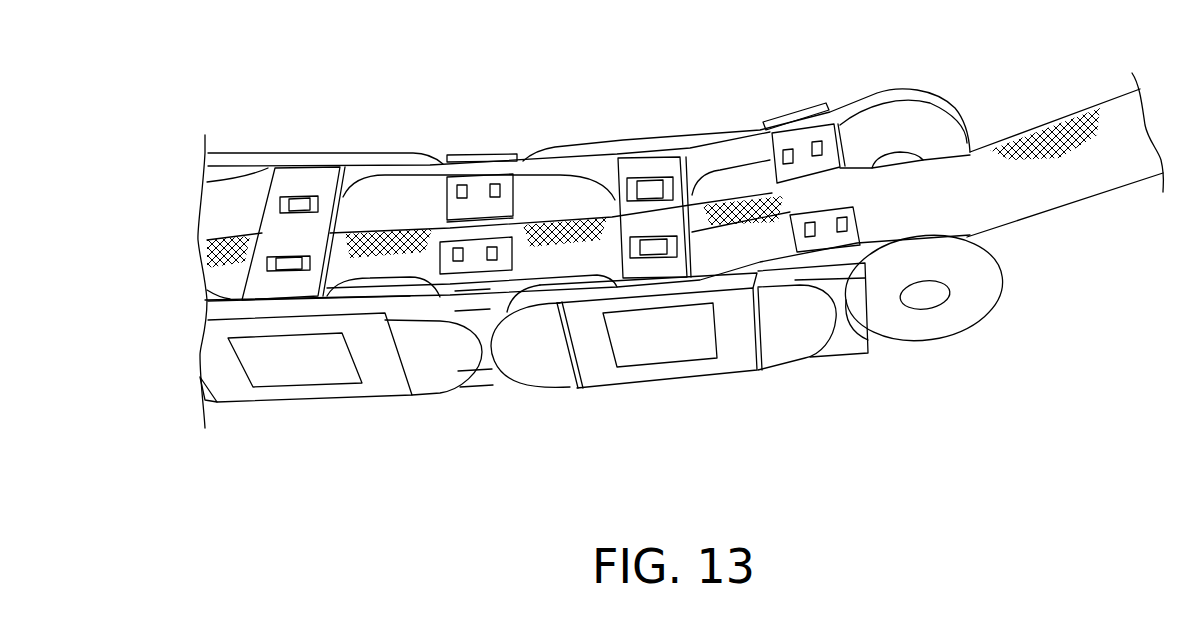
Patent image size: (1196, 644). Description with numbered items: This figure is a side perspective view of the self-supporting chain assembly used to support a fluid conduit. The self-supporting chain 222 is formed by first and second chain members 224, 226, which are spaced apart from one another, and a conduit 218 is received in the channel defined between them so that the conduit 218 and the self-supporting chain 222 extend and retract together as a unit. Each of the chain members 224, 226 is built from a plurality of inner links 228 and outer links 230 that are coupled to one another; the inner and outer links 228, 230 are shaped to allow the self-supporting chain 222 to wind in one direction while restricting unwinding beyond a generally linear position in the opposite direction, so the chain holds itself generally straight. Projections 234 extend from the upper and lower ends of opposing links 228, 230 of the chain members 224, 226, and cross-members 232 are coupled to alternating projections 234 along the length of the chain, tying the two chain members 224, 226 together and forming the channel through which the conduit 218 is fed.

The conduit 218 is at (942, 186).
The self-supporting chain 222 is at (265, 414).
The first chain member 224 is at (418, 404).
The second chain member 226 is at (390, 141).
The inner link 228 is at (493, 390).
The outer link 230 is at (563, 390).
The cross-member 232 is at (652, 212).
The projection 234 is at (795, 143).